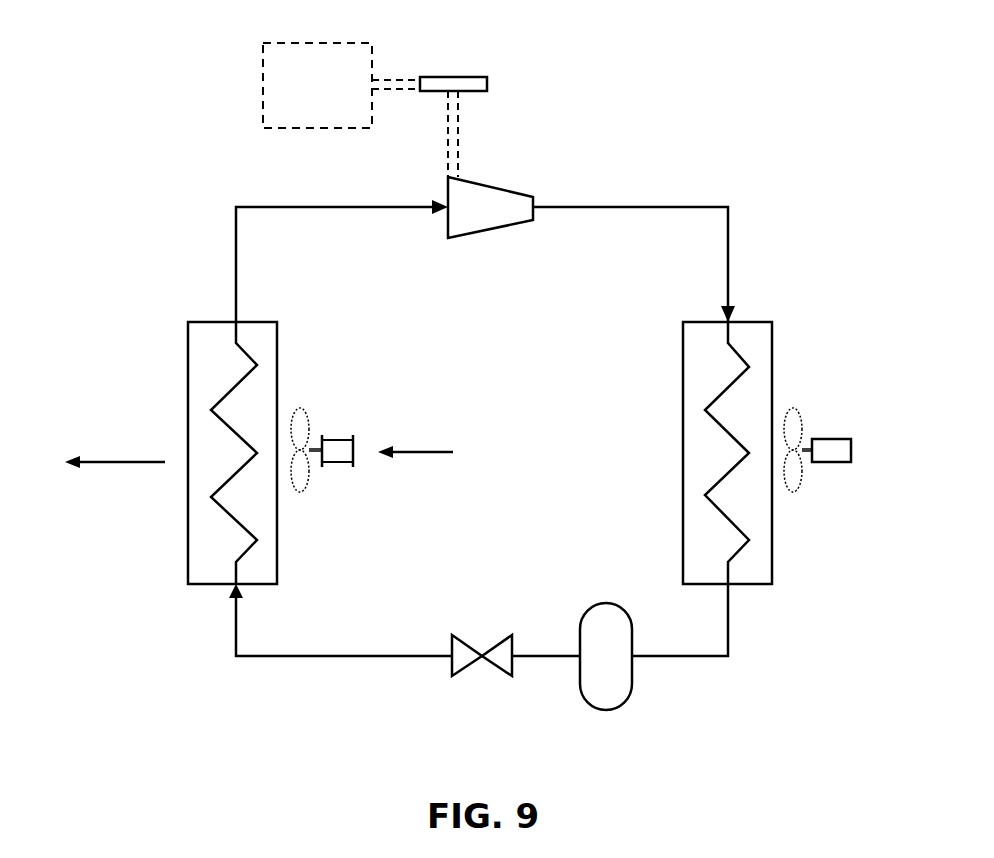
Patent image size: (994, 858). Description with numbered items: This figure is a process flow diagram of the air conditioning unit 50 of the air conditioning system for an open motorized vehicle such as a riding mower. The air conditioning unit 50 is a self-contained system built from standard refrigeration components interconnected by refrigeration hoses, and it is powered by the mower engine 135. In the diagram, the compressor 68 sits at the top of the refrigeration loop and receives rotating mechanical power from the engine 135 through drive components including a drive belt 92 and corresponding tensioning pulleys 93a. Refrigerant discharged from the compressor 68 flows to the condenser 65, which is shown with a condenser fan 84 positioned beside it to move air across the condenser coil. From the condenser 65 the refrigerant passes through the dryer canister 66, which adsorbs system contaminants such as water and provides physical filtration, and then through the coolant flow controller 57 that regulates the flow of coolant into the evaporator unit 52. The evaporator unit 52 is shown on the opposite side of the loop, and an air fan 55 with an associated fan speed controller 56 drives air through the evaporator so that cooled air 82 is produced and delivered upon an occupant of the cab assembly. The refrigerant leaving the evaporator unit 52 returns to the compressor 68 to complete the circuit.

The air conditioning unit 50 is at (765, 47).
The evaporator unit 52 is at (205, 322).
The air fan 55 is at (372, 447).
The fan speed controller 56 is at (338, 440).
The coolant flow controller 57 is at (482, 657).
The condenser 65 is at (772, 537).
The dryer canister 66 is at (624, 705).
The compressor 68 is at (490, 184).
The cooled air 82 is at (113, 463).
The condenser fan 84 is at (830, 439).
The drive belt 92 is at (459, 150).
The tensioning pulleys 93a is at (487, 84).
The engine 135 is at (286, 43).